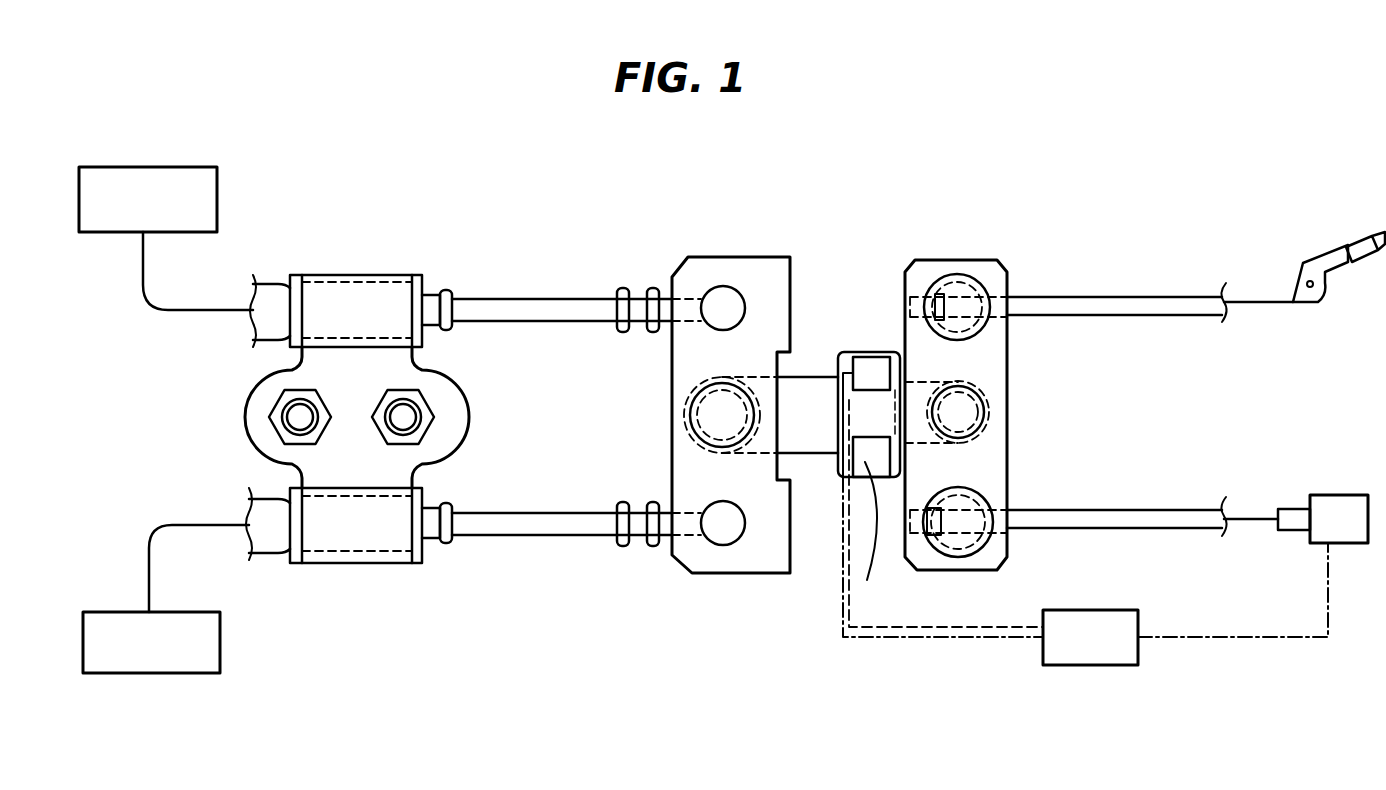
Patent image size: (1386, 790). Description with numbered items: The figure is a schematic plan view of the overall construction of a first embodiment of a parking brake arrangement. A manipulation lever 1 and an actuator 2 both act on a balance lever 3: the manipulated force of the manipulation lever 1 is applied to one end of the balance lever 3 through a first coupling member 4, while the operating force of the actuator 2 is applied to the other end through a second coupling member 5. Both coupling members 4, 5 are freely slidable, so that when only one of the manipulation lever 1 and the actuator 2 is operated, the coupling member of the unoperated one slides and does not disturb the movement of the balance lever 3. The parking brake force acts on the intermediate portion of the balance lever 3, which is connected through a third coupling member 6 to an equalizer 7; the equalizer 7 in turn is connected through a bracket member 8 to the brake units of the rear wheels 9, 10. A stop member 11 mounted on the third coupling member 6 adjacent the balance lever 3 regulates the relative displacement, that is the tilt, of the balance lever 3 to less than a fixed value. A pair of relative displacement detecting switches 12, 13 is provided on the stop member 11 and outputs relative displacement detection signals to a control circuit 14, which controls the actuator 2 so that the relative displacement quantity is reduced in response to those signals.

The manipulation lever 1 is at (1327, 262).
The actuator 2 is at (1350, 545).
The balance lever 3 is at (978, 558).
The first coupling member 4 is at (975, 282).
The second coupling member 5 is at (983, 497).
The third coupling member 6 is at (810, 453).
The equalizer 7 is at (687, 270).
The bracket member 8 is at (390, 563).
The rear wheel 9 is at (162, 167).
The rear wheel 10 is at (218, 665).
The stop member 11 is at (875, 539).
The relative displacement detecting switch 12 is at (853, 476).
The relative displacement detecting switch 13 is at (868, 370).
The control circuit 14 is at (1060, 655).